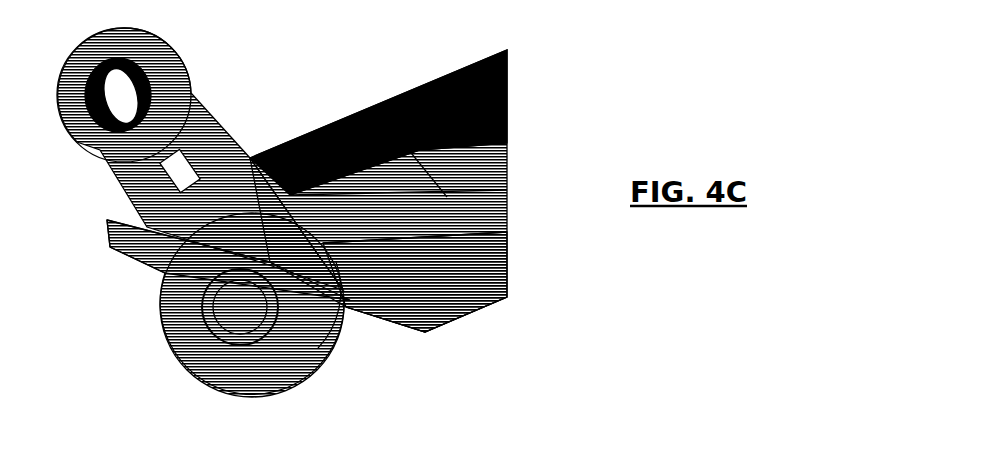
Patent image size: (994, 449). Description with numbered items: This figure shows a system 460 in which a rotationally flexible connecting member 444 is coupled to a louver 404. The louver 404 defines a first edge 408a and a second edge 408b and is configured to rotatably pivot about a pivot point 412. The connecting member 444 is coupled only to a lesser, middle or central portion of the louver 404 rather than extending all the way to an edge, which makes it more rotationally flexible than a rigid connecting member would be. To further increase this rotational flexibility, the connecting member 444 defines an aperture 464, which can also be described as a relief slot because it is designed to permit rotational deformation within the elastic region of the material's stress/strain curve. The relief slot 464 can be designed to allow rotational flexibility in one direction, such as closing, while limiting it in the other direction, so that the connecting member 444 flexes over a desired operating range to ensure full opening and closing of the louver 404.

The louver 404 is at (412, 100).
The first edge 408a is at (467, 312).
The second edge 408b is at (336, 127).
The pivot point 412 is at (227, 313).
The rotationally flexible connecting member 444 is at (135, 176).
The aperture or relief slot 464 is at (177, 157).
The system 460 is at (598, 313).